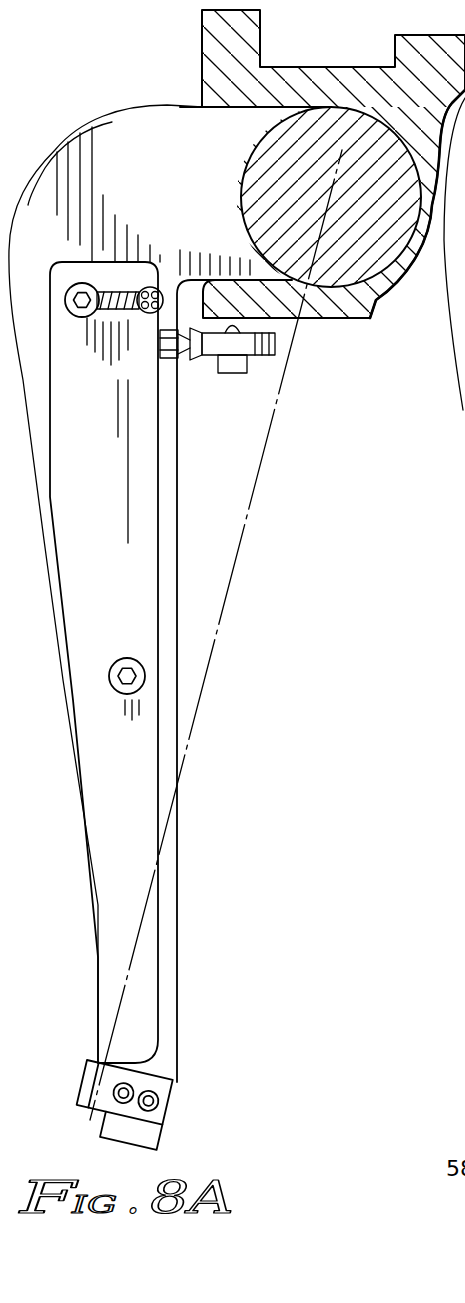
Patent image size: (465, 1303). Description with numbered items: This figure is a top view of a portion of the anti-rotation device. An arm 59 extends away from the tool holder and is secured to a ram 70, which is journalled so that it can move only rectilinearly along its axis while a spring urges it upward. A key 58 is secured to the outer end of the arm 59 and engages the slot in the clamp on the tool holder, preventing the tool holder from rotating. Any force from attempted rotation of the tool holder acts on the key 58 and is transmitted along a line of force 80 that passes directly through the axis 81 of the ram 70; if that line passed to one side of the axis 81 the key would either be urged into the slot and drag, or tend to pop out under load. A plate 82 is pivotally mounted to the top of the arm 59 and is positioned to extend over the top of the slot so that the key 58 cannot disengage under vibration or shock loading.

The ram 70 is at (334, 116).
The axis of the ram 81 is at (330, 196).
The line of force 80 is at (262, 464).
The plate 82 is at (137, 808).
The arm 59 is at (167, 914).
The key 58 is at (157, 1118).